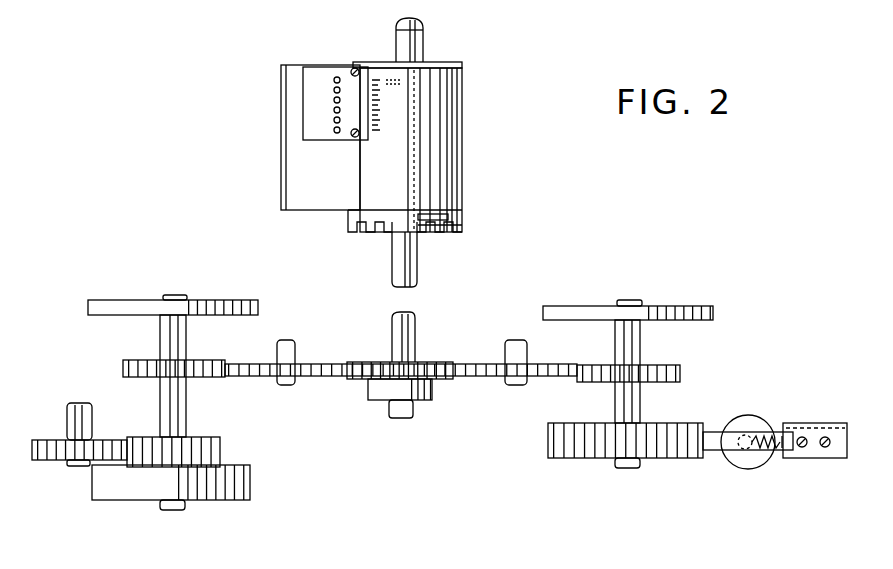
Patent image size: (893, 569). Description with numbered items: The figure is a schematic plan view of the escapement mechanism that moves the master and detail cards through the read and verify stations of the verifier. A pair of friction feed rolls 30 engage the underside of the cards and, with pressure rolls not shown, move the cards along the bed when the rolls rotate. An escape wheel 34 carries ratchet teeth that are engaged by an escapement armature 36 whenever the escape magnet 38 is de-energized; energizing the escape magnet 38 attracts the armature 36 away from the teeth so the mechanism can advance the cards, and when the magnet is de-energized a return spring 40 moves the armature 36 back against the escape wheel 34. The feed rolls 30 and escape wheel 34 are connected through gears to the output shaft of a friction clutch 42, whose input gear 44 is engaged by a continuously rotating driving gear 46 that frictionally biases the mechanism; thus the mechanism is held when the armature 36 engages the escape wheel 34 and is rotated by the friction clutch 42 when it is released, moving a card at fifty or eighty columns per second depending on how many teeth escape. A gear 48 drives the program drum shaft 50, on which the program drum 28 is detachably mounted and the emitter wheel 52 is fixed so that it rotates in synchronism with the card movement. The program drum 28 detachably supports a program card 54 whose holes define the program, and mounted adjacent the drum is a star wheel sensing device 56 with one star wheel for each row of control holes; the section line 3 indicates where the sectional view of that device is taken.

The section line 3- 3 is at (268, 98).
The program drum 28 is at (402, 152).
The friction feed rolls 30 is at (258, 300).
The escape wheel 34 is at (548, 440).
The escapement armature 36 is at (713, 432).
The escape magnet 38 is at (745, 464).
The return spring 40 is at (767, 440).
The friction clutch 42 is at (243, 490).
The input gear 44 is at (217, 452).
The driving gear 46 is at (50, 460).
The gear 48 is at (425, 370).
The program drum shaft 50 is at (415, 272).
The emitter wheel 52 is at (455, 216).
The program card 54 is at (450, 185).
The star wheel sensing device 56 is at (360, 86).